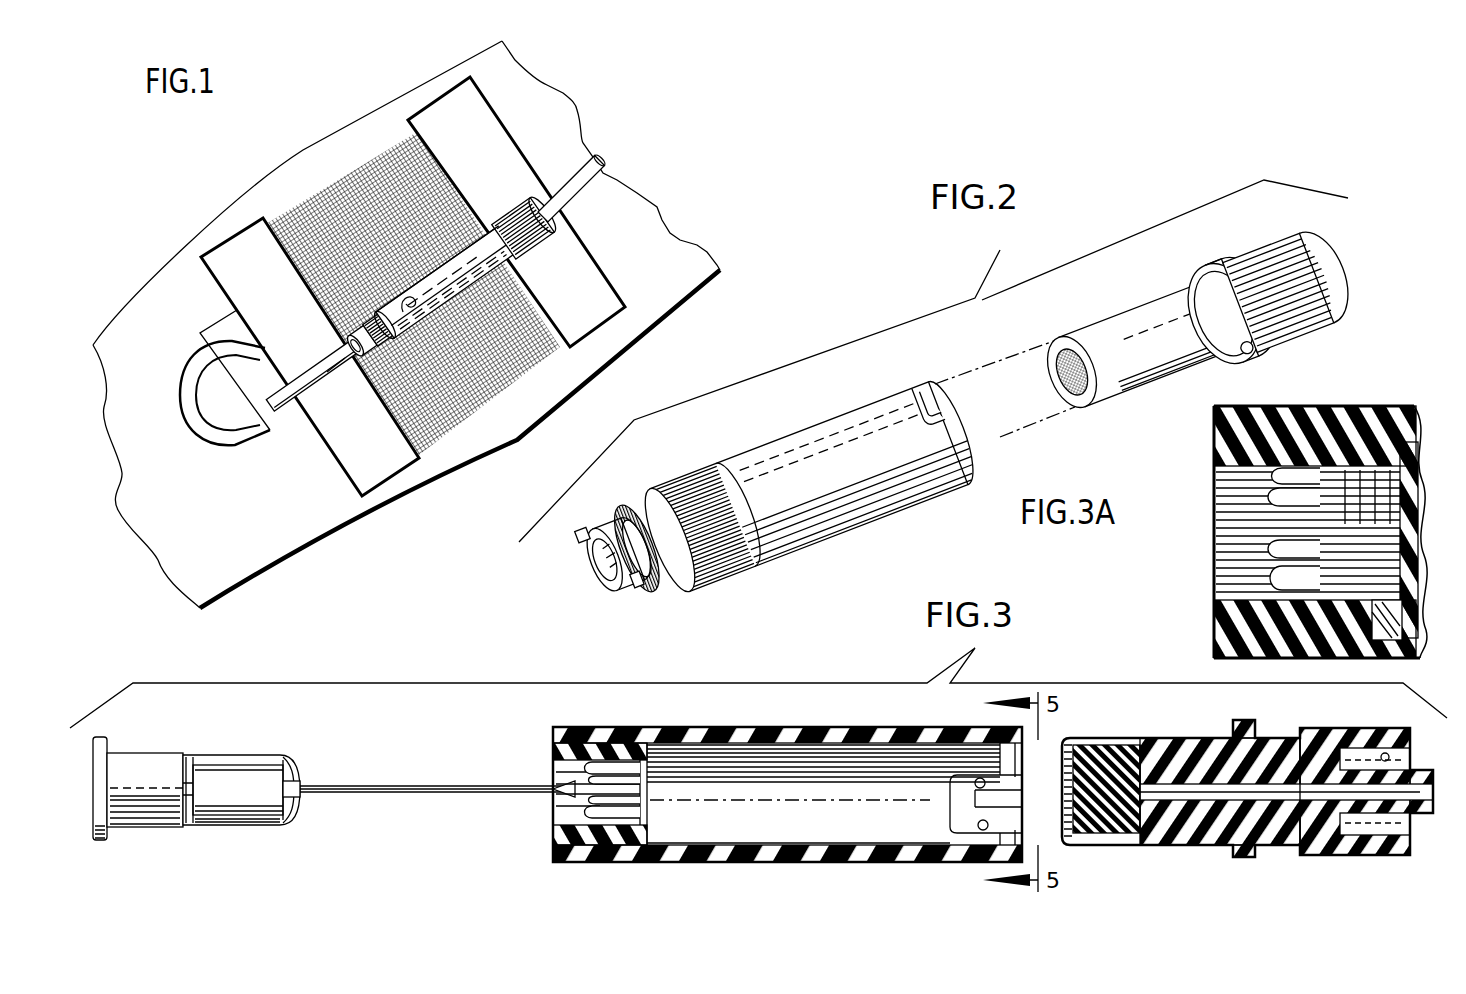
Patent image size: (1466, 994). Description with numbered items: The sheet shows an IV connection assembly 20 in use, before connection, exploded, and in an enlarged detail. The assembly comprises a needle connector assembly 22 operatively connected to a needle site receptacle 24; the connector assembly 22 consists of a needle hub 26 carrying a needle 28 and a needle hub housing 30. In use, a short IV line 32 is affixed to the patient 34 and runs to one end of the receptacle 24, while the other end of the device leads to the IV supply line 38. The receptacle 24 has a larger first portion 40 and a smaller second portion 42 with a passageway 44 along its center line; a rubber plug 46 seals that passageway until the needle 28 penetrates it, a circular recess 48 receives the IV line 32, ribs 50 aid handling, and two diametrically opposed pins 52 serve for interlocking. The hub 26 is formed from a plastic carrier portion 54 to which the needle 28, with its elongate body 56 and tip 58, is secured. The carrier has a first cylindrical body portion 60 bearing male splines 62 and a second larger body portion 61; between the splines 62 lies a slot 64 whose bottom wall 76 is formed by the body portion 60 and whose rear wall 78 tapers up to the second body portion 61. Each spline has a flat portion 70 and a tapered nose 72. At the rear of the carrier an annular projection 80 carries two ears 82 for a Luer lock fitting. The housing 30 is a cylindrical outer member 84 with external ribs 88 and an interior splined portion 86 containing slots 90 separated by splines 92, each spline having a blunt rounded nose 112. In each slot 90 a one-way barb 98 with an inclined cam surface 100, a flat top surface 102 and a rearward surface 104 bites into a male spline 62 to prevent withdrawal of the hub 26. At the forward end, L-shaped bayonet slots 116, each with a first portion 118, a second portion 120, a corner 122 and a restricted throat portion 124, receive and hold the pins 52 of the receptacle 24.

In FIG. 1, the IV connection assembly 20 is at (523, 303).
In FIG. 1, the needle connector assembly 22 is at (493, 330).
In FIG. 2, the needle connector assembly 22 is at (820, 476).
In FIG. 1, the needle site receptacle 24 is at (327, 372).
In FIG. 2, the needle site receptacle 24 is at (1139, 339).
In FIG. 3A, the needle site receptacle 24 is at (1372, 412).
In FIG. 3, the needle site receptacle 24 is at (1247, 807).
In FIG. 1, the needle hub 26 is at (378, 330).
In FIG. 2, the needle hub 26 is at (688, 565).
In FIG. 3, the needle hub 26 is at (150, 805).
In FIG. 3, the needle 28 is at (396, 786).
In FIG. 2, the needle hub housing 30 is at (815, 515).
In FIG. 3, the needle hub housing 30 is at (808, 858).
In FIG. 1, the IV line 32 is at (332, 378).
In FIG. 1, the patient 34 is at (181, 482).
In FIG. 1, the IV supply line 38 is at (577, 180).
In FIG. 1, the first portion 40 is at (526, 226).
In FIG. 2, the first portion 40 is at (1252, 262).
In FIG. 3, the first portion 40 is at (1352, 728).
In FIG. 2, the second portion 42 is at (1100, 385).
In FIG. 3A, the second portion 42 is at (1236, 628).
In FIG. 3, the second portion 42 is at (1165, 740).
In FIG. 3, the passageway 44 is at (1285, 856).
In FIG. 3, the rubber plug 46 is at (1108, 835).
In FIG. 3, the circular recess 48 is at (1385, 750).
In FIG. 2, the ribs 50 is at (1318, 268).
In FIG. 2, the pins 52 is at (1245, 338).
In FIG. 3, the pins 52 is at (1240, 720).
In FIG. 3, the carrier portion 54 is at (135, 760).
In FIG. 3, the elongate body 56 is at (440, 795).
In FIG. 3, the tip 58 is at (562, 795).
In FIG. 3, the first cylindrical body portion 60 is at (225, 755).
In FIG. 3, the second cylindrical body portion 61 is at (184, 822).
In FIG. 3, the male splines 62 is at (280, 757).
In FIG. 3, the slot 64 is at (290, 773).
In FIG. 3, the flat portion 70 is at (258, 828).
In FIG. 3, the nose 72 is at (292, 828).
In FIG. 3, the bottom wall 76 is at (240, 768).
In FIG. 3, the rear wall 78 is at (188, 757).
In FIG. 3, the annular projection 80 is at (97, 841).
In FIG. 1, the ears 82 is at (361, 341).
In FIG. 2, the ears 82 is at (570, 560).
In FIG. 3, the outer member 84 is at (748, 740).
In FIG. 3, the splined portion 86 is at (618, 745).
In FIG. 2, the ribs 88 is at (695, 495).
In FIG. 3A, the slots 90 is at (1262, 518).
In FIG. 3, the slots 90 is at (556, 850).
In FIG. 3A, the splines 92 is at (1330, 462).
In FIG. 3, the splines 92 is at (603, 830).
In FIG. 3A, the barb 98 is at (1268, 494).
In FIG. 3, the barb 98 is at (655, 760).
In FIG. 3A, the cam surface 100 is at (1270, 580).
In FIG. 3A, the top surface 102 is at (1268, 548).
In FIG. 3A, the rearward surface 104 is at (1390, 640).
In FIG. 3A, the nose 112 is at (1220, 462).
In FIG. 1, the bayonet slots 116 is at (409, 304).
In FIG. 2, the bayonet slots 116 is at (928, 398).
In FIG. 3, the bayonet slots 116 is at (950, 800).
In FIG. 3, the first portion 118 is at (980, 770).
In FIG. 3, the second portion 120 is at (950, 860).
In FIG. 3A, the corner 122 is at (1412, 620).
In FIG. 3, the restricted throat portion 124 is at (990, 855).